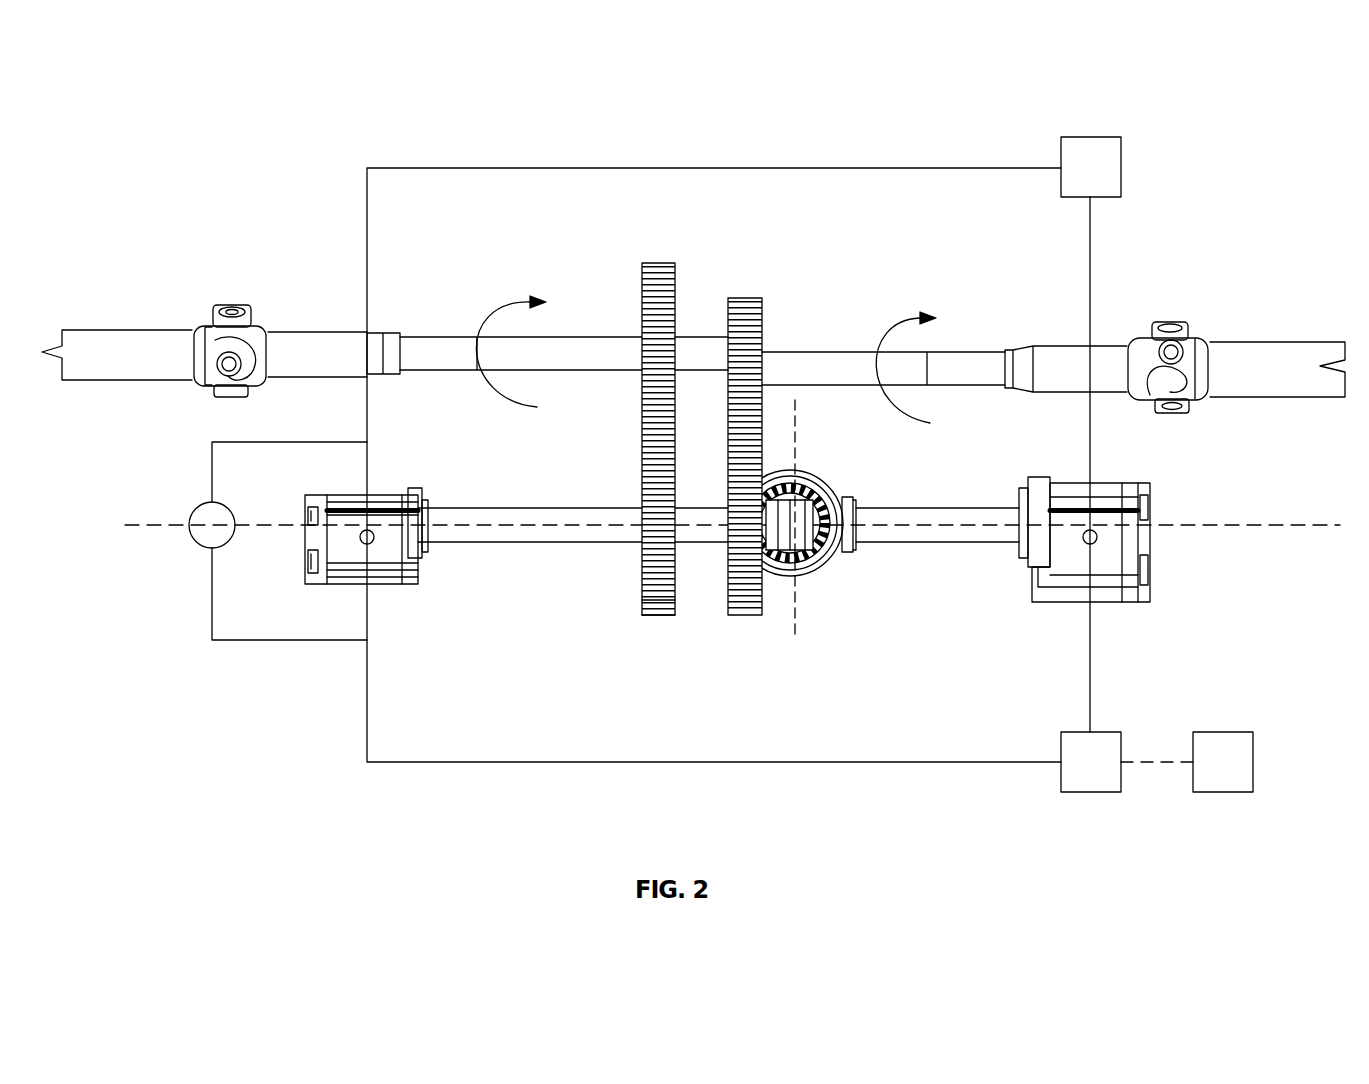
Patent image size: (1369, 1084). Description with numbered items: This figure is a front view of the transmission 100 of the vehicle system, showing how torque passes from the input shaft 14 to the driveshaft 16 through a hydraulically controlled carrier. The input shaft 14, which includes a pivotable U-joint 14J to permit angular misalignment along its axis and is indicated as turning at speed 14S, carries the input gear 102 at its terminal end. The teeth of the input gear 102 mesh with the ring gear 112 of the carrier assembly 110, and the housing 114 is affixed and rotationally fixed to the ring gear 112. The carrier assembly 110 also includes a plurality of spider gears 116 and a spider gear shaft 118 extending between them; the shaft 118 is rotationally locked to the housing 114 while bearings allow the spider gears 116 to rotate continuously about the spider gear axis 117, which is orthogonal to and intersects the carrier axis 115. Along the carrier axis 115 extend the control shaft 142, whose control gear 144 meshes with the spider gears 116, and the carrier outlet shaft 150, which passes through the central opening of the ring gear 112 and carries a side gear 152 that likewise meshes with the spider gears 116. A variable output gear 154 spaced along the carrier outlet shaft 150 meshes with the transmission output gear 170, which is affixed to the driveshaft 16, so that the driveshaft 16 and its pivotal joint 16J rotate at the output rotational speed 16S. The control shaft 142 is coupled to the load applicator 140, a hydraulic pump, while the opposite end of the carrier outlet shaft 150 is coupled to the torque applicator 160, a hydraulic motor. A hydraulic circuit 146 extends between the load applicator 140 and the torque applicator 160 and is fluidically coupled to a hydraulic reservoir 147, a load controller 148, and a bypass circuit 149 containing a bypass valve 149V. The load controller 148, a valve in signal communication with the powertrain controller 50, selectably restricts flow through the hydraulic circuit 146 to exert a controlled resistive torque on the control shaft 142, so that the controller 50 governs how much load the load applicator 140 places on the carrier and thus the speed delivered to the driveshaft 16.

The transmission 100 is at (244, 130).
The hydraulic circuit 146 is at (436, 167).
The hydraulic reservoir 147 is at (1090, 137).
The load controller 148 is at (1090, 792).
The powertrain controller 50 is at (1222, 792).
The carrier axis 115 is at (163, 524).
The bypass circuit 149 is at (212, 600).
The bypass valve 149V is at (200, 535).
The driveshaft 16 is at (130, 330).
The pivotal joint 16J is at (236, 306).
The output rotational speed 16S is at (520, 306).
The transmission output gear 170 is at (658, 263).
The carrier assembly 110 is at (799, 570).
The housing 114 is at (816, 470).
The spider gears 116 is at (795, 500).
The spider gear shaft 118 is at (805, 545).
The ring gear 112 is at (730, 580).
The spider gear axis 117 is at (793, 622).
The input gear 102 is at (745, 298).
The variable output gear 154 is at (655, 615).
The side gear 152 is at (767, 493).
The control gear 144 is at (841, 497).
The control shaft 142 is at (950, 507).
The carrier outlet shaft 150 is at (540, 508).
The torque applicator 160 is at (350, 495).
The load applicator 140 is at (1096, 483).
The input shaft 14 is at (1275, 342).
The pivotable joint 14J is at (1178, 324).
The second shaft rotation direction 14S is at (912, 318).